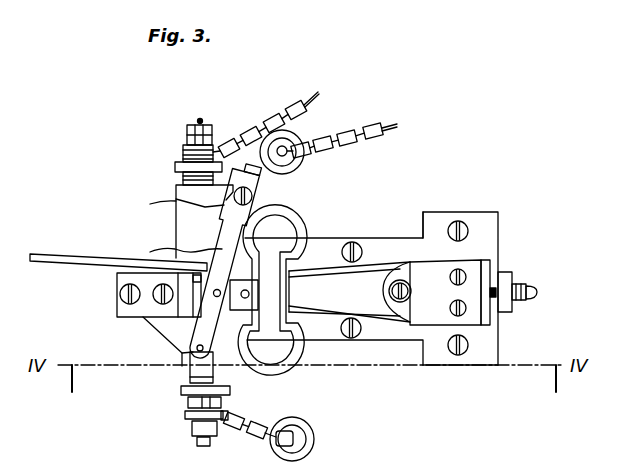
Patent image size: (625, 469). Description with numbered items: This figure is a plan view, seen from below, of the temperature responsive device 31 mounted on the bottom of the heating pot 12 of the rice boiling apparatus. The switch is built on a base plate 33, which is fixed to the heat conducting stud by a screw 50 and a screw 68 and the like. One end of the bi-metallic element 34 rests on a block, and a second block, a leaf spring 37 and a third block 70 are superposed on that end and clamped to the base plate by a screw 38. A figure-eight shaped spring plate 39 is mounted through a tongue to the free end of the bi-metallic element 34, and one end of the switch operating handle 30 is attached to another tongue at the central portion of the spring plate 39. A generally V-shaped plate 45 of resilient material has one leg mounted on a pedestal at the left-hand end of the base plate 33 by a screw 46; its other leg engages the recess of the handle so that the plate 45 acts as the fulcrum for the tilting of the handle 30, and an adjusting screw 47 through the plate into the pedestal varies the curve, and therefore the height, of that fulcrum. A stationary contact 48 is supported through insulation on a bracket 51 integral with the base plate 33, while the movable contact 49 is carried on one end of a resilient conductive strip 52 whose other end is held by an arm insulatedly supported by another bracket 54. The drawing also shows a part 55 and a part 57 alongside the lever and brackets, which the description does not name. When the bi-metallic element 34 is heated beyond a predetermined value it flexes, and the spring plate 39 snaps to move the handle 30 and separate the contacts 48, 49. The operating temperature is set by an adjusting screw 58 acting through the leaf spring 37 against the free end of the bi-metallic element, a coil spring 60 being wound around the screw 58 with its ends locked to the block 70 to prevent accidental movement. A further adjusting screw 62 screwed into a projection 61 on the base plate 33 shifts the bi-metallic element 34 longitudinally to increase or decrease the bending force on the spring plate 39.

The heating pot 12 is at (470, 381).
The switch operating handle 30 is at (75, 253).
The temperature responsive device 31 is at (360, 205).
The base plate 33 is at (433, 360).
The bi-metallic element 34 is at (320, 313).
The leaf spring 37 is at (373, 318).
The screw 38 is at (472, 308).
The spring plate 39 is at (327, 198).
The V-shaped plate 45 is at (137, 307).
The screw 46 is at (118, 295).
The adjusting screw 47 is at (158, 305).
The stationary contact 48 is at (200, 362).
The movable contact 49 is at (196, 348).
The screw 50 is at (465, 222).
The bracket 51 is at (194, 398).
The conductive strip 52 is at (225, 229).
The bracket 54 is at (178, 168).
The lead wire 55 is at (205, 196).
The plate 57 is at (232, 300).
The adjusting screw 58 is at (398, 280).
The coil spring 60 is at (414, 299).
The projection 61 is at (505, 280).
The adjusting screw 62 is at (538, 293).
The screw 68 is at (358, 245).
The third block 70 is at (472, 270).